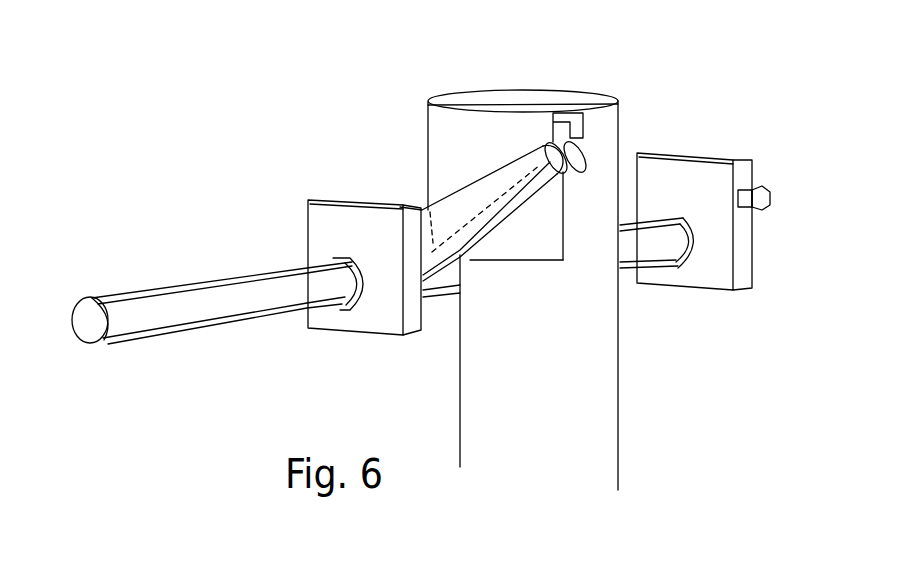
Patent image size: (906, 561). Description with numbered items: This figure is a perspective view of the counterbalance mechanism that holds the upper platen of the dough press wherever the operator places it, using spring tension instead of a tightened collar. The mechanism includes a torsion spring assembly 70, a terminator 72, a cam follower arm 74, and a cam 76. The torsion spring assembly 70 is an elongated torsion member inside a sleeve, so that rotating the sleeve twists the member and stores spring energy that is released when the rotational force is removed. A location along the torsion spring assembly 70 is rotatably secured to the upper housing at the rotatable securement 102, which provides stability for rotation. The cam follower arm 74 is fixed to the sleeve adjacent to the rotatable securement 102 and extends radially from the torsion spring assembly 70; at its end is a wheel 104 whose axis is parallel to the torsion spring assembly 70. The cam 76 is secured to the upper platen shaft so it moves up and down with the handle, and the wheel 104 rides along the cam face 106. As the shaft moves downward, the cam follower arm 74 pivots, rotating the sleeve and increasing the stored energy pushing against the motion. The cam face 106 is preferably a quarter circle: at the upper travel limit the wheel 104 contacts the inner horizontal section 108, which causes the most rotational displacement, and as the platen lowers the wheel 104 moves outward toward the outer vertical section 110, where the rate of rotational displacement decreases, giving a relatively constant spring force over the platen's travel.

The torsion spring assembly 70 is at (184, 284).
The terminator 72 is at (720, 152).
The cam follower arm 74 is at (463, 187).
The cam 76 is at (490, 112).
The rotatable securement 102 is at (360, 337).
The wheel 104 is at (587, 152).
The cam face 106 is at (582, 120).
The horizontal section of the cam face 108 is at (471, 263).
The vertical section of the cam face 110 is at (552, 124).